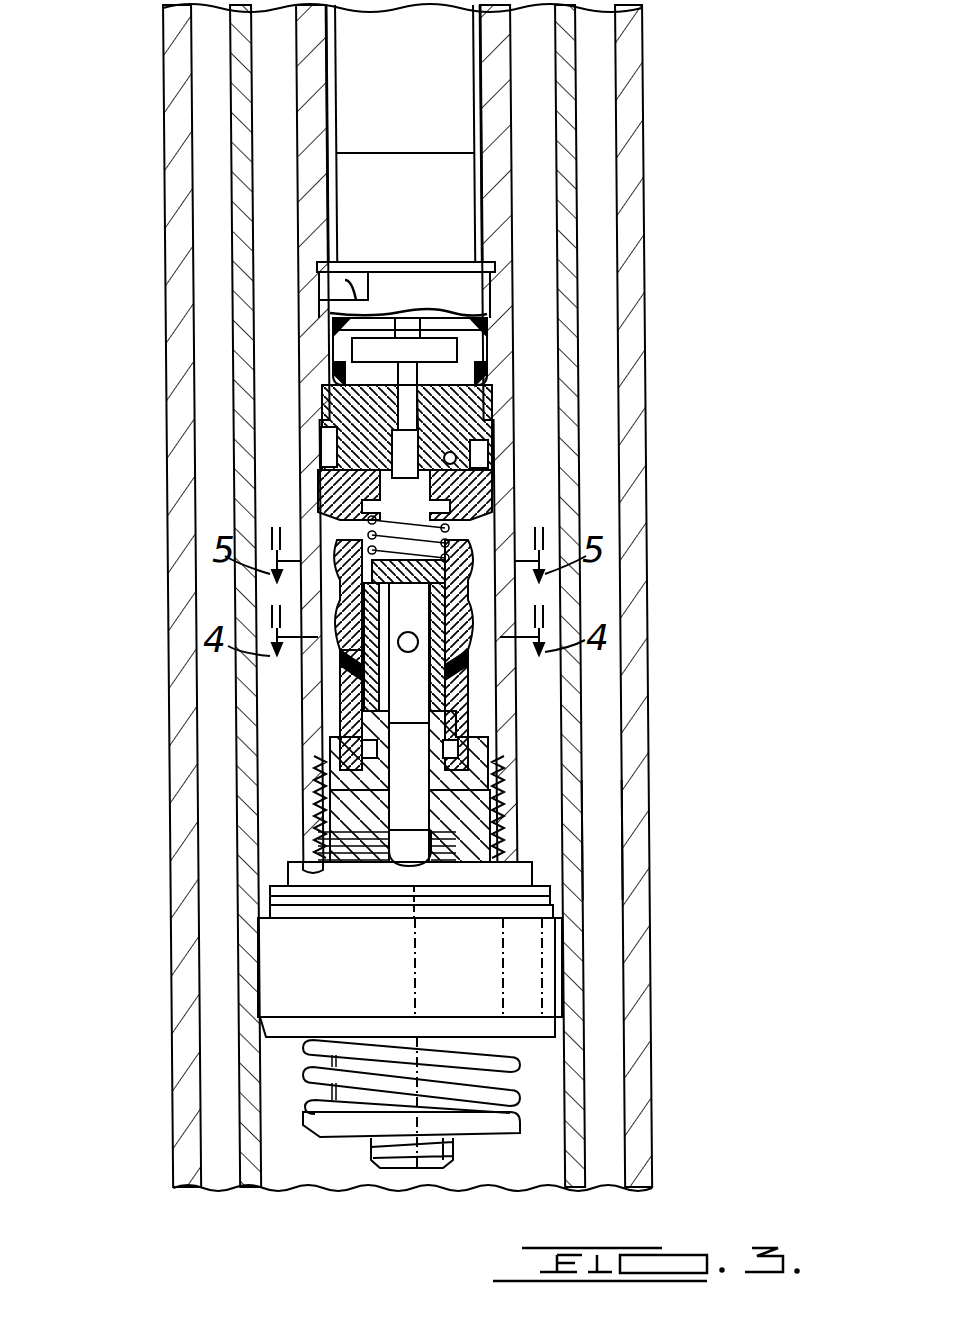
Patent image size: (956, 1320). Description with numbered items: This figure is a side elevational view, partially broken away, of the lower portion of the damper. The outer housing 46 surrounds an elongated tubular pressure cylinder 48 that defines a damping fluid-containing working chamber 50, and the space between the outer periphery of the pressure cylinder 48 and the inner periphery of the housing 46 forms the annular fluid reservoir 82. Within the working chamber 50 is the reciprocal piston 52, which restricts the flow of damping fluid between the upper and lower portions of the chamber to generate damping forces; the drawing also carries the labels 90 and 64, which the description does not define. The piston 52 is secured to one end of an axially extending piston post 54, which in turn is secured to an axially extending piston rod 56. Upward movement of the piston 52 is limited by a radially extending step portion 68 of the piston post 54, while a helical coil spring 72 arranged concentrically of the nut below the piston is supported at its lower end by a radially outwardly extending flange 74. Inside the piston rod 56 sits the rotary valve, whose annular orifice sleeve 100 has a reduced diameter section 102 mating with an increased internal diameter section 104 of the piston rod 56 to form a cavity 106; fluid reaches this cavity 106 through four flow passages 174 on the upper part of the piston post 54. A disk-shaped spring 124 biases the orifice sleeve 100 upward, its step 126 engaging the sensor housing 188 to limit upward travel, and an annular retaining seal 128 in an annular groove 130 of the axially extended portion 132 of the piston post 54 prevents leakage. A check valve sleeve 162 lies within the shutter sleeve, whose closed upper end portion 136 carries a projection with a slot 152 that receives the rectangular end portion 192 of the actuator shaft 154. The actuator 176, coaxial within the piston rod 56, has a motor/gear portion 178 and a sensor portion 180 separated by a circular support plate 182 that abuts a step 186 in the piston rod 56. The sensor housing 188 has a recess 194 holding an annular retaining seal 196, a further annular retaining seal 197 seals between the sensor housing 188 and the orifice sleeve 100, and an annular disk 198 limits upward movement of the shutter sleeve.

The housing 46 is at (633, 908).
The working chamber 50 is at (585, 836).
The annular fluid reservoir 82 is at (605, 864).
The piston rod 56 is at (311, 152).
The annular retaining seal 197 is at (482, 442).
The bore 90 is at (348, 60).
The actuator 176 is at (480, 116).
The motor/gear portion 178 is at (461, 181).
The circular support plate 182 is at (386, 265).
The step 186 is at (491, 268).
The sensor portion 180 is at (496, 342).
The shaft 154 is at (402, 370).
The rectangular end portion 192 is at (412, 396).
The slot 152 is at (400, 424).
The sensor housing 188 is at (328, 440).
The step 126 is at (470, 442).
The annular retaining seal 196 is at (338, 476).
The recess 194 is at (468, 478).
The closed upper end portion 136 is at (337, 516).
The annular disk 198 is at (476, 522).
The cavity 106 is at (326, 600).
The increased internal diameter section 104 is at (306, 676).
The reduced diameter section 102 is at (346, 694).
The orifice sleeve 100 is at (470, 662).
The axially extended portion 132 is at (462, 720).
The check valve sleeve 162 is at (436, 680).
The annular retaining seal 128 is at (342, 750).
The annular groove 130 is at (466, 746).
The disk-shaped spring 124 is at (472, 772).
The flow passages 174 is at (322, 826).
The step portion 68 is at (310, 870).
The base 64 is at (300, 878).
The pressure cylinder 48 is at (580, 963).
The reciprocal piston 52 is at (555, 990).
The piston post 54 is at (500, 1058).
The helical coil spring 72 is at (506, 1105).
The flange 74 is at (512, 1134).